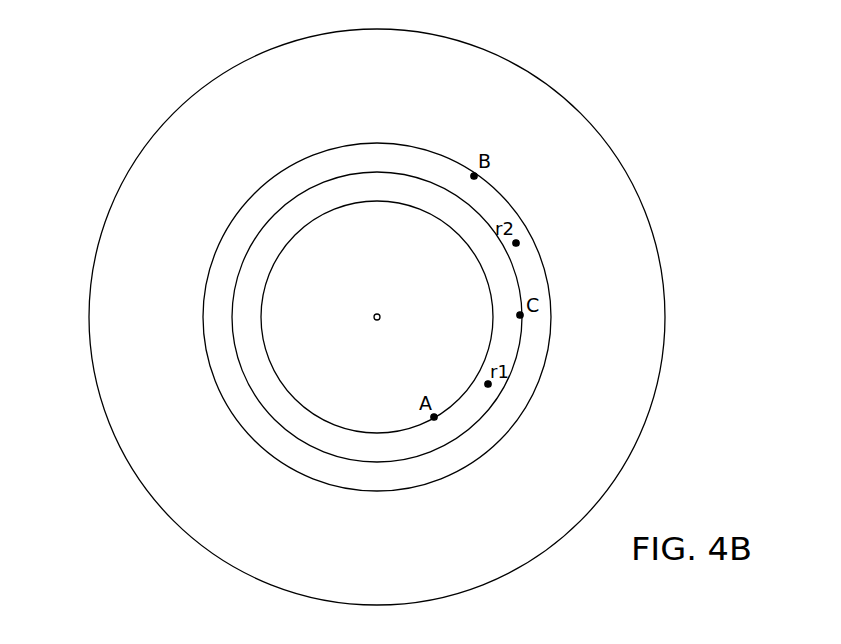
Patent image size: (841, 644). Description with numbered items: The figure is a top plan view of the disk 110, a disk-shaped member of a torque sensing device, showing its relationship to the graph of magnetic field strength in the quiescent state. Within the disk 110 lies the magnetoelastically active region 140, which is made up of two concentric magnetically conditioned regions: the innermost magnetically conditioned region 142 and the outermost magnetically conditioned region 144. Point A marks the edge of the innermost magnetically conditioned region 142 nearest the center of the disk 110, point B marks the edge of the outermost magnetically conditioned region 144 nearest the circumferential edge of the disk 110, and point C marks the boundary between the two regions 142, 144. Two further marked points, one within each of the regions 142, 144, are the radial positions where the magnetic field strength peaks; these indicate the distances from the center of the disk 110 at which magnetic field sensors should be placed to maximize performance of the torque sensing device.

The disk 110 is at (153, 98).
The magnetoelastically active region 140 is at (208, 226).
The innermost magnetically conditioned region 142 is at (250, 324).
The outermost magnetically conditioned region 144 is at (237, 389).